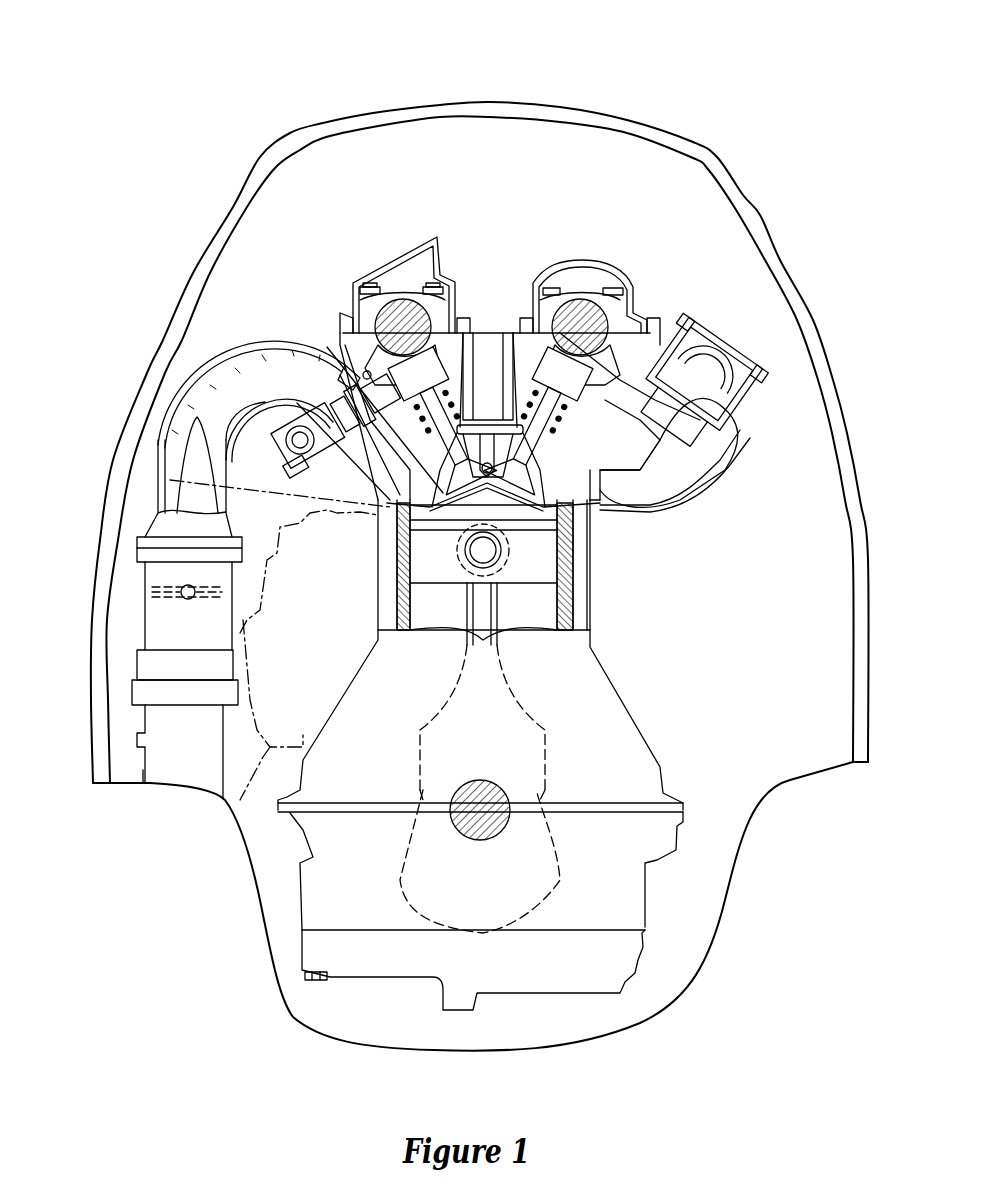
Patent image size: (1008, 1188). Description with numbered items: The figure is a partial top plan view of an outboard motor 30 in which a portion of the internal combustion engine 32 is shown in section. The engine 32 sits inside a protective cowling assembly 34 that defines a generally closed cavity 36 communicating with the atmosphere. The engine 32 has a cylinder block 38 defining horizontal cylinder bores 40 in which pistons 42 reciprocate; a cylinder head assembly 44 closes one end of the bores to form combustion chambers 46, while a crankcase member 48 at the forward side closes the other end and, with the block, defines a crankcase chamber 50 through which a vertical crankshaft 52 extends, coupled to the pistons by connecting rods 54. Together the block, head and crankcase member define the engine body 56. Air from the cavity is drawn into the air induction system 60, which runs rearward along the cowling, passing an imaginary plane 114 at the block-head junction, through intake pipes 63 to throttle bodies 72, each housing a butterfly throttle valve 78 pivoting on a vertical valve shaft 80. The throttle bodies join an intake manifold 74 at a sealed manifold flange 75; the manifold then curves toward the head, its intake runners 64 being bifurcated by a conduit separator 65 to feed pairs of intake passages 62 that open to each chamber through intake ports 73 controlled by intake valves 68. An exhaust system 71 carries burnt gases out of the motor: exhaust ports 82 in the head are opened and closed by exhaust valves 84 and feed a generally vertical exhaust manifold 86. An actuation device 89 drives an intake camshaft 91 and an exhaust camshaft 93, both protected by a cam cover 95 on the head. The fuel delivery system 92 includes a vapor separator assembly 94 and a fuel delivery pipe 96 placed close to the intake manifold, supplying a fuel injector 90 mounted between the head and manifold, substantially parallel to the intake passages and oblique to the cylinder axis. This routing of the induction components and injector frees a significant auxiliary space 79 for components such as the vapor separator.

The outboard motor 30 is at (533, 76).
The internal combustion engine 32 is at (290, 897).
The protective cowling assembly 34 is at (787, 256).
The cavity 36 is at (692, 226).
The cylinder block 38 is at (630, 715).
The cylinder bore 40 is at (555, 583).
The piston 42 is at (540, 558).
The cylinder head assembly 44 is at (682, 488).
The combustion chamber 46 is at (548, 508).
The crankcase member 48 is at (650, 886).
The crankcase chamber 50 is at (600, 780).
The crankshaft 52 is at (495, 835).
The connecting rod 54 is at (498, 618).
The engine body 56 is at (598, 633).
The air induction system 60 is at (143, 721).
The intake passage 62 is at (352, 366).
The intake pipe 63 is at (143, 768).
The intake runner 64 is at (232, 382).
The conduit separator 65 is at (282, 378).
The intake valve 68 is at (472, 380).
The exhaust system 71 is at (700, 458).
The throttle body 72 is at (145, 627).
The intake port 73 is at (517, 457).
The intake manifold 74 is at (193, 378).
The manifold flange 75 is at (180, 542).
The throttle valve 78 is at (140, 590).
The auxiliary space 79 is at (309, 655).
The valve shaft 80 is at (181, 594).
The exhaust port 82 is at (656, 446).
The exhaust valve 84 is at (505, 380).
The exhaust manifold 86 is at (716, 400).
The actuation device 89 is at (415, 285).
The fuel injector 90 is at (362, 440).
The intake camshaft 91 is at (403, 318).
The fuel delivery system 92 is at (253, 505).
The exhaust camshaft 93 is at (583, 320).
The vapor separator assembly 94 is at (265, 750).
The cam cover 95 is at (443, 260).
The fuel delivery pipe 96 is at (278, 452).
The imaginary plane 114 is at (170, 480).